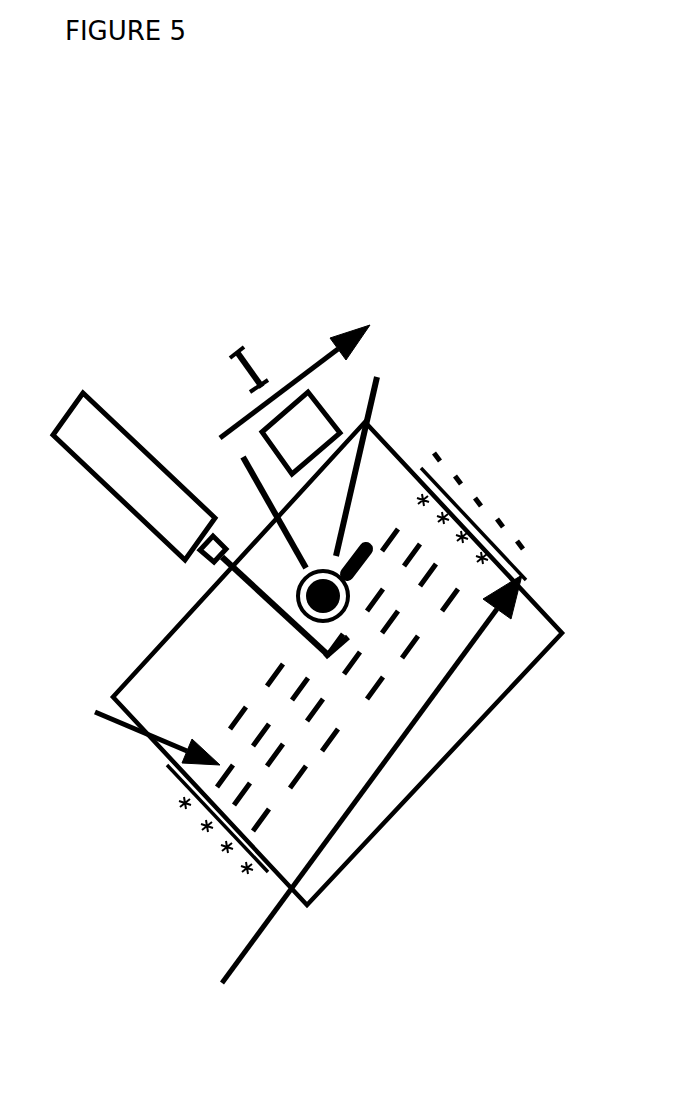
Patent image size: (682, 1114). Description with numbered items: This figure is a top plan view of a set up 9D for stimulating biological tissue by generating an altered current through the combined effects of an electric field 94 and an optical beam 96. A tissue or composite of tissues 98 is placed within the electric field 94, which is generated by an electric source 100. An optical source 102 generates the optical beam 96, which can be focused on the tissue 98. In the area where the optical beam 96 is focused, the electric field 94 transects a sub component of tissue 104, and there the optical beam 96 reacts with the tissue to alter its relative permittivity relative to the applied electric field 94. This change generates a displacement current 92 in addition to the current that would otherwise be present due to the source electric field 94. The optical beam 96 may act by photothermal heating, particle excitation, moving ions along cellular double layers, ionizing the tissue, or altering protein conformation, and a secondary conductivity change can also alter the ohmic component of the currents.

The treatment system 9D is at (470, 223).
The displacement current 92 is at (282, 351).
The electric field 94 is at (136, 734).
The optical beam 96 is at (287, 617).
The tissue 98 is at (457, 745).
The electric source 100 is at (211, 889).
The optical source 102 is at (110, 491).
The sub component of tissue 104 is at (323, 403).